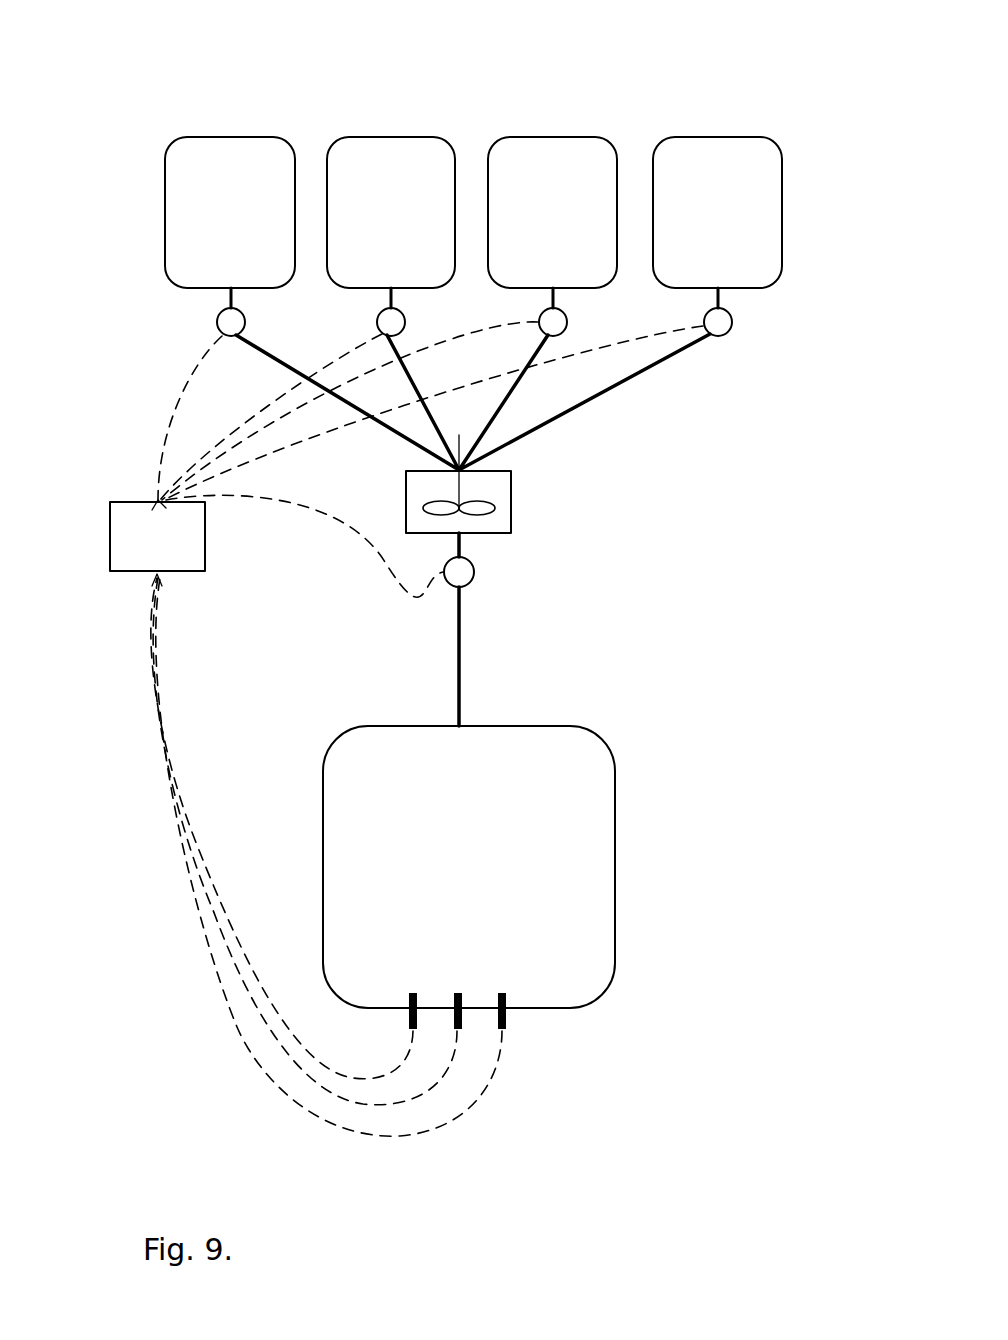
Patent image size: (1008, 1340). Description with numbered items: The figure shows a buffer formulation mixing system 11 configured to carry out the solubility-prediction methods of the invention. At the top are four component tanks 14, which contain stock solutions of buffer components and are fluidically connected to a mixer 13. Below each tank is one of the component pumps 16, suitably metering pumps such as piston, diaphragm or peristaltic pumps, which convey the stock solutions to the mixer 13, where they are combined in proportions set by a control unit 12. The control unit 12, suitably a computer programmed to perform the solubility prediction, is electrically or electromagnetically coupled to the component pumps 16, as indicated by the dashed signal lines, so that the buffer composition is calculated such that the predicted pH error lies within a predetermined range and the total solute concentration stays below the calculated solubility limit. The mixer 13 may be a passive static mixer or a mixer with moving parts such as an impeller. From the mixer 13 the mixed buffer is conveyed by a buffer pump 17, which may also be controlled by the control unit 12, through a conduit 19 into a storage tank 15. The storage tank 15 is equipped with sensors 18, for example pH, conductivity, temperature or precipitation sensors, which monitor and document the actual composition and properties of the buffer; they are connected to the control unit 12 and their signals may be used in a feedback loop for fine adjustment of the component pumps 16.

The mixing system 11 is at (690, 671).
The control unit 12 is at (110, 537).
The mixer 13 is at (511, 500).
The component tanks 14 is at (737, 137).
The storage tank 15 is at (615, 865).
The component pumps 16 is at (730, 313).
The buffer pump 17 is at (474, 572).
The sensors 18 is at (506, 993).
The conduit 19 is at (461, 635).